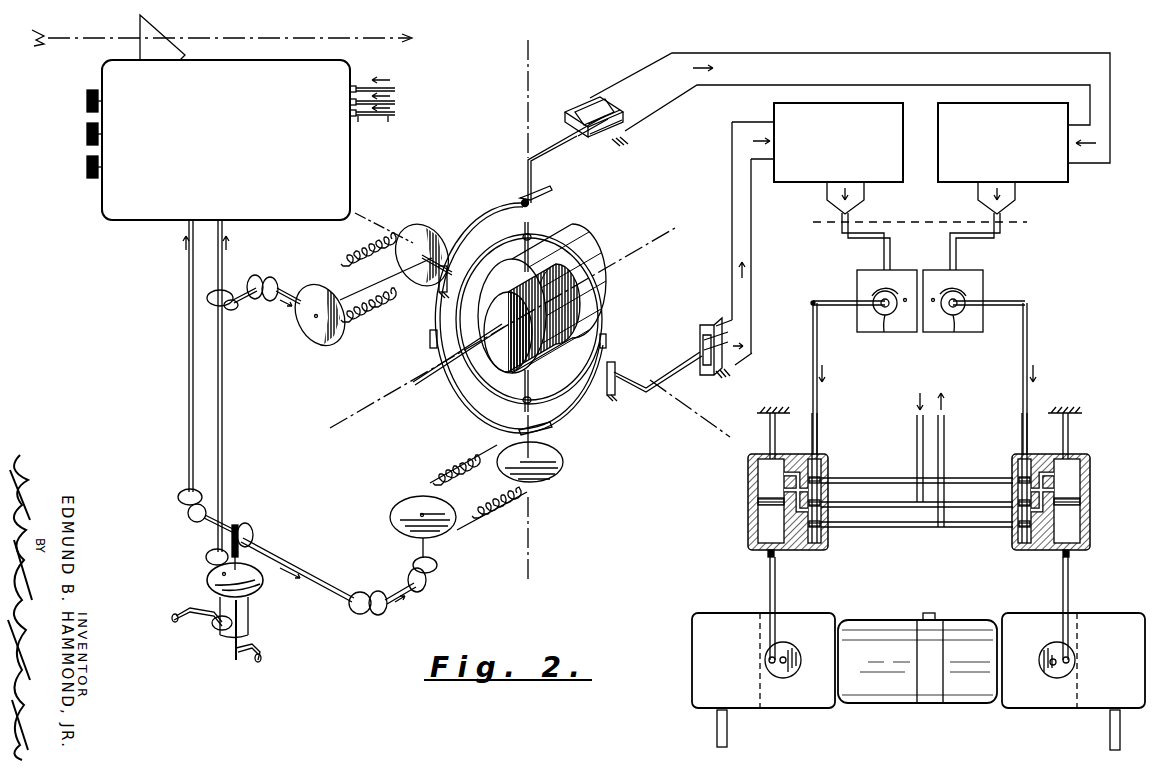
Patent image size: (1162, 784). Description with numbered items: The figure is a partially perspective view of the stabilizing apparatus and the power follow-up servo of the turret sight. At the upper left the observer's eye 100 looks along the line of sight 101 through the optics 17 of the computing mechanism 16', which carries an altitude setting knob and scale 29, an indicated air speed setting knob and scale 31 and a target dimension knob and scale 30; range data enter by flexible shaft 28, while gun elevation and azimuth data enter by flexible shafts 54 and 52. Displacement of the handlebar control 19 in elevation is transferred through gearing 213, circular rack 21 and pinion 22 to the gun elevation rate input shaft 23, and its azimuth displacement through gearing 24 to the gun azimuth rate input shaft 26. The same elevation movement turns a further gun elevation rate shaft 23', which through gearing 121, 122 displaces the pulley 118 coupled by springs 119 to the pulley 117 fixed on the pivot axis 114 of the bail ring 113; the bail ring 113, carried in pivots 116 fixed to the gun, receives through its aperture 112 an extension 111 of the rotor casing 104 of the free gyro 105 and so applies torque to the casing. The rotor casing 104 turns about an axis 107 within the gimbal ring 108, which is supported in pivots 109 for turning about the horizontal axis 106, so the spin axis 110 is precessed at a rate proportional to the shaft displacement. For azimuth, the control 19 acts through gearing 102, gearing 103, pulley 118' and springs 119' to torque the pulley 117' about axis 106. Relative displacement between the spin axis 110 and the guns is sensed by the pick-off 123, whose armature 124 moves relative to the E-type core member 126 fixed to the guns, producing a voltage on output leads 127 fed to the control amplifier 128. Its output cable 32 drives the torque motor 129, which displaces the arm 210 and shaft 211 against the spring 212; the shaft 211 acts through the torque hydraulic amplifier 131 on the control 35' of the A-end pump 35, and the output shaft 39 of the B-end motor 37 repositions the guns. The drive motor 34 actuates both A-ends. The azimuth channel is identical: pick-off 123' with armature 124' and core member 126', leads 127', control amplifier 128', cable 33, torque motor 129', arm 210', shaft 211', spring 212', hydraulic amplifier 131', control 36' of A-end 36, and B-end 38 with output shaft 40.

The eye of the observer 100 is at (41, 25).
The line of sight 101 is at (195, 38).
The optics 17 is at (148, 30).
The computing mechanism 16' is at (248, 117).
The altitude setting knob and scale 29 is at (90, 90).
The indicated air speed setting knob and scale 31 is at (88, 126).
The target dimension knob and scale 30 is at (88, 160).
The flexible shaft 28 is at (380, 50).
The flexible shaft 54 is at (364, 118).
The flexible shaft 52 is at (390, 118).
The flexible shaft 23 is at (171, 356).
The flexible shaft 26 is at (222, 390).
The gearing 102 is at (224, 290).
The gearing 103 is at (268, 280).
The pulley 118' is at (320, 319).
The springs 119' is at (386, 267).
The pulley 117' is at (424, 243).
The pivots 109 is at (446, 262).
The rotor casing 104 is at (544, 248).
The axis 107 is at (532, 228).
The free gyro 105 is at (542, 298).
The spin axis 110 is at (632, 256).
The extension 111 is at (412, 380).
The aperture 112 is at (430, 334).
The gimbal ring 108 is at (606, 342).
The horizontal axis 106 is at (684, 412).
The bail ring 113 is at (522, 206).
The pivot axis 114 is at (528, 146).
The pivots 116 is at (550, 192).
The pick-off 123' is at (588, 106).
The armature 124' is at (595, 143).
The core member 126' is at (643, 148).
The output leads 127' is at (850, 92).
The control amplifier 128 is at (817, 228).
The control amplifier 128' is at (1023, 158).
The output cable 32 is at (884, 250).
The cable 33 is at (968, 250).
The torque motor 129 is at (867, 297).
The torque motor 129' is at (982, 297).
The spring 212 is at (868, 337).
The spring 212' is at (971, 337).
The arm 210 is at (834, 294).
The arm 210' is at (1012, 294).
The shaft 211 is at (802, 379).
The shaft 211' is at (1049, 379).
The torque hydraulic amplifier 131 is at (866, 472).
The torque hydraulic amplifier 131' is at (1072, 482).
The hydraulic motor 37 is at (716, 620).
The control 35' is at (801, 617).
The variable displacement hydraulic drive pump 35 is at (802, 725).
The output shaft 39 is at (727, 740).
The hydraulic motor 38 is at (1090, 620).
The control 36' is at (1042, 617).
The variable displacement hydraulic drive pump 36 is at (1031, 725).
The output shaft 40 is at (1110, 740).
The drive motor 34 is at (892, 626).
The output leads 127 is at (757, 305).
The pick-off 123 is at (706, 345).
The armature 124 is at (658, 373).
The core member 126 is at (739, 376).
The circular rack 21 is at (214, 540).
The pinion 22 is at (238, 522).
The gearing 24 is at (208, 566).
The gearing 213 is at (224, 638).
The handlebar control 19 is at (252, 660).
The gun elevation rate shaft 23' is at (297, 570).
The gearing 121 is at (366, 614).
The gearing 122 is at (426, 582).
The pulley 118 is at (404, 516).
The springs 119 is at (478, 487).
The pulley 117 is at (547, 466).